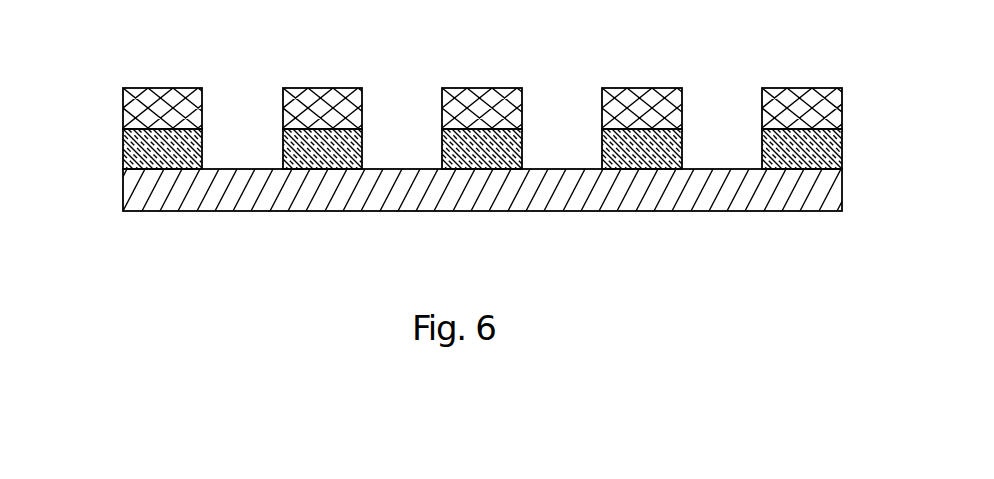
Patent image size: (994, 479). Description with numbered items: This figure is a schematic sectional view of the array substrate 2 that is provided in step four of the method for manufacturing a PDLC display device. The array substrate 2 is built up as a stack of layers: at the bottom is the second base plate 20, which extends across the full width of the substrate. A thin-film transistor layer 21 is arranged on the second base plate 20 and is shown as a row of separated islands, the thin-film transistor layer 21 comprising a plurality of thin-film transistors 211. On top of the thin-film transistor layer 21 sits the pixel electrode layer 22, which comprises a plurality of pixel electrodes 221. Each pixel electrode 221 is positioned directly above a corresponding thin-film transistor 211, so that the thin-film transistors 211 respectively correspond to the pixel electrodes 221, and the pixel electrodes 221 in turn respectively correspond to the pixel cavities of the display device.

The array substrate 2 is at (471, 150).
The second base plate 20 is at (796, 192).
The thin-film transistor layer 21 is at (457, 99).
The thin-film transistor 211 is at (487, 147).
The pixel electrode layer 22 is at (463, 79).
The pixel electrode 221 is at (322, 112).